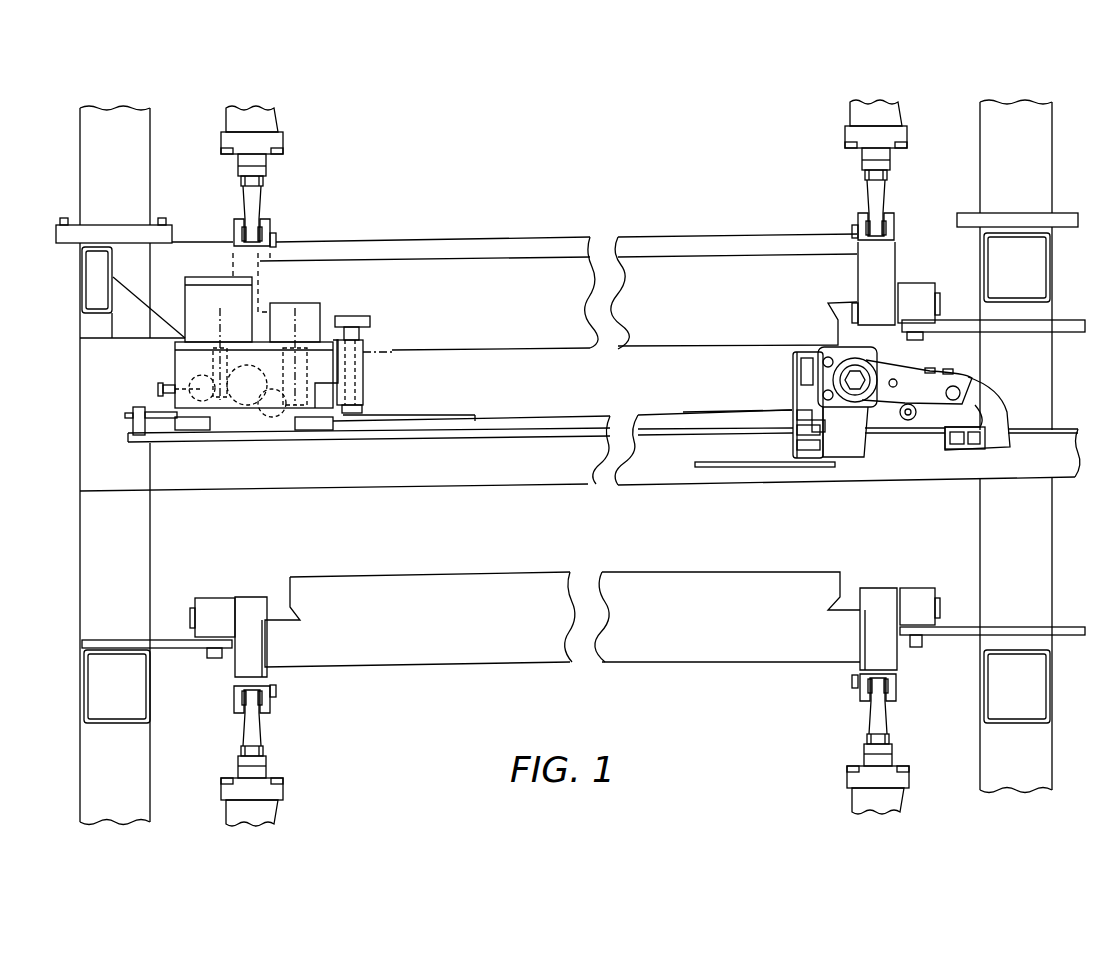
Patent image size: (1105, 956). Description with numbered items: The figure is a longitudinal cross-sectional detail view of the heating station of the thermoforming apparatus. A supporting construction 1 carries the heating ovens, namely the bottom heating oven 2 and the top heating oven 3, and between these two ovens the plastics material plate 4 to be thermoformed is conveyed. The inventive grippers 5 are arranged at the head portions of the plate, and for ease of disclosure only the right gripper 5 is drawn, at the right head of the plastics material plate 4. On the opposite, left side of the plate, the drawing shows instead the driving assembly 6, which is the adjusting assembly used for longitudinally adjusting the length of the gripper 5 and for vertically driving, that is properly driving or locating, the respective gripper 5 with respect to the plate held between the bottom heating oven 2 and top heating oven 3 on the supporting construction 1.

The supporting construction 1 is at (1003, 500).
The bottom heating oven 2 is at (752, 645).
The top heating oven 3 is at (677, 265).
The plastics material plate 4 is at (745, 465).
The gripper 5 is at (883, 496).
The driving assembly 6 is at (305, 283).